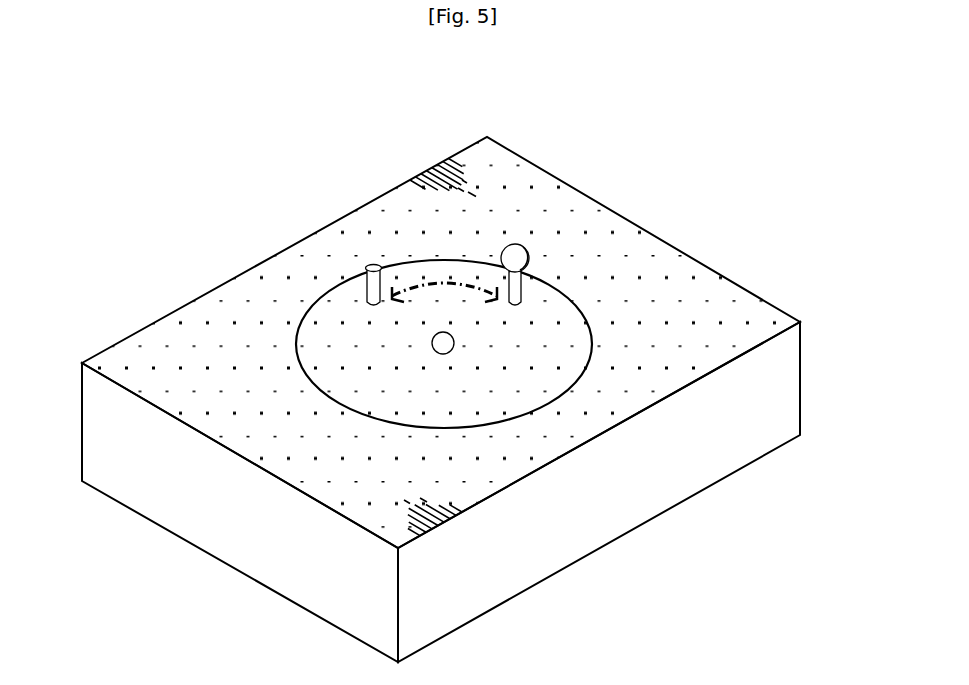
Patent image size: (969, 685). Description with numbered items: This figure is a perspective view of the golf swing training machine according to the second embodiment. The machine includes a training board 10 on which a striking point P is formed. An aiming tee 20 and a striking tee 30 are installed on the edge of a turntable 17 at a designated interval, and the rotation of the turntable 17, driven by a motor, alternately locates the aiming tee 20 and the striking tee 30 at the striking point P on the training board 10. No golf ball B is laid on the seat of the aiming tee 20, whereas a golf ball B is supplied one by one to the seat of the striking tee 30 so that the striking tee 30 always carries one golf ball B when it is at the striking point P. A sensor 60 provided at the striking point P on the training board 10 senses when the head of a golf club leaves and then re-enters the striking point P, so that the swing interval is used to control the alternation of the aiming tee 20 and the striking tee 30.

The training board 10 is at (682, 263).
The turntable 17 is at (578, 355).
The aiming tee 20 is at (366, 269).
The striking tee 30 is at (488, 265).
The sensor 60 is at (452, 350).
The golf ball B is at (515, 253).
The striking point P is at (423, 260).